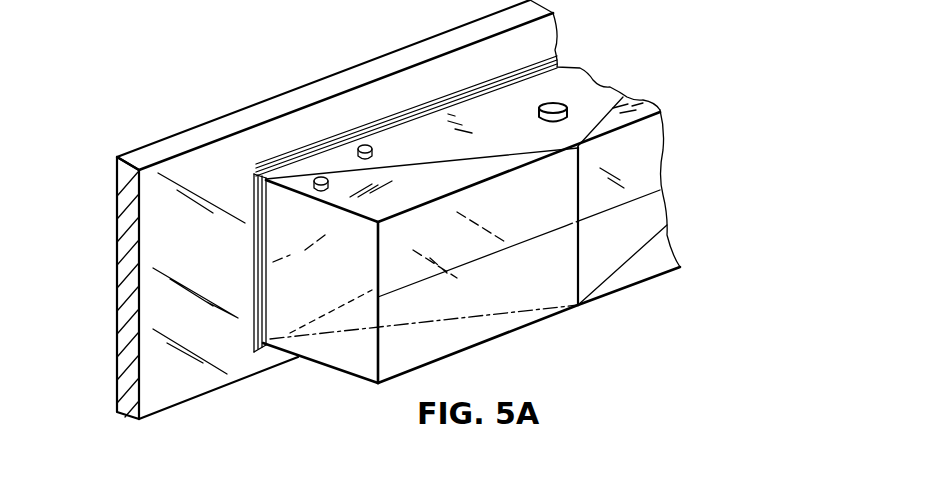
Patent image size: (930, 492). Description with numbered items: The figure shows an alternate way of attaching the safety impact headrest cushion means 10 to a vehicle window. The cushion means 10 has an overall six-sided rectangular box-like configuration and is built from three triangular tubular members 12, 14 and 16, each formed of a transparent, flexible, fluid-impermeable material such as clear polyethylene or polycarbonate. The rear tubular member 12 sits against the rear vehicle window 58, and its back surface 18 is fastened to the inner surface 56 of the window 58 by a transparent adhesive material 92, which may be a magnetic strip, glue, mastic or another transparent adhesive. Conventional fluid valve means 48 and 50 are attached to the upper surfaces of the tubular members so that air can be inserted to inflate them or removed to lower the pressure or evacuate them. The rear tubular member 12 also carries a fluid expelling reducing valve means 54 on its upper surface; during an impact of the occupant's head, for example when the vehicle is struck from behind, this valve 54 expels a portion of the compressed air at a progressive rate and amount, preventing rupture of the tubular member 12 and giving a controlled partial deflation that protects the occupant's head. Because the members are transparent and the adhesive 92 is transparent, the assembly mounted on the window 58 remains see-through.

The cushion means 10 is at (586, 317).
The rear tubular member 12 is at (450, 151).
The tubular member 14 is at (420, 203).
The tubular member 16 is at (648, 110).
The back surface 18 is at (578, 68).
The fluid valve means 48 is at (369, 145).
The fluid valve means 50 is at (313, 178).
The fluid expelling reducing valve means 54 is at (537, 112).
The inner surface 56 is at (150, 345).
The rear vehicle window 58 is at (117, 179).
The transparent adhesive material 92 is at (252, 243).